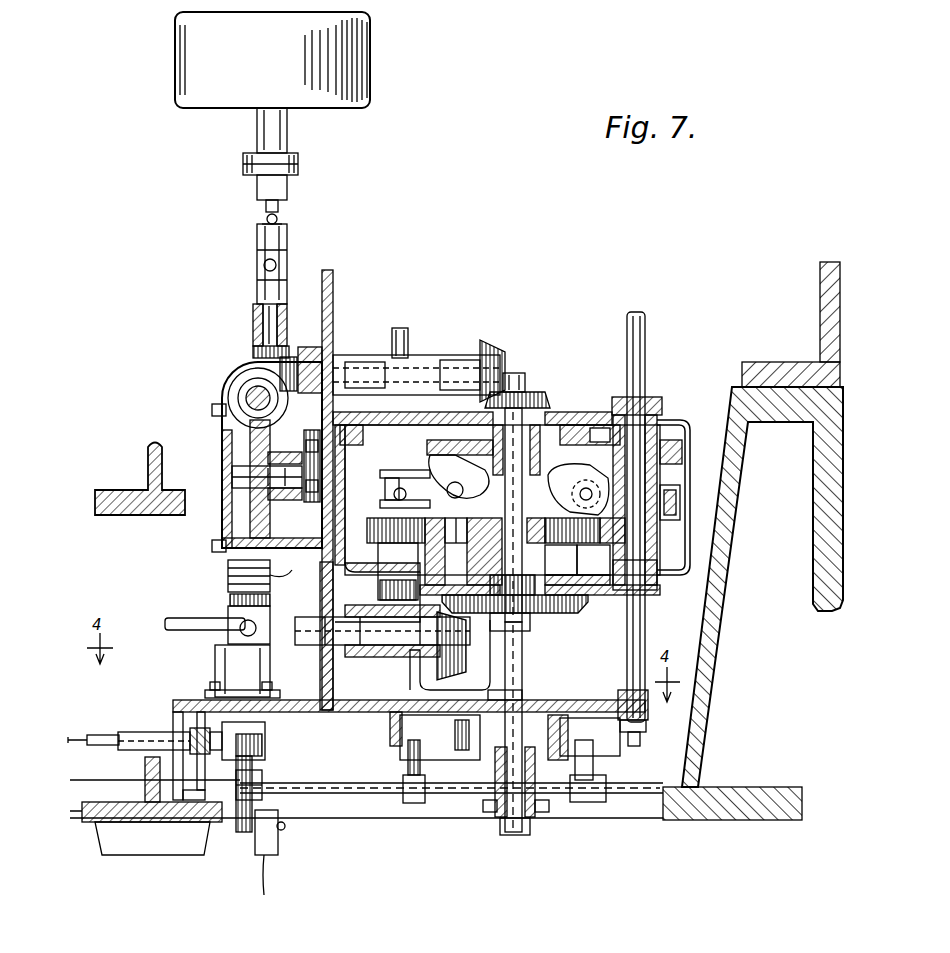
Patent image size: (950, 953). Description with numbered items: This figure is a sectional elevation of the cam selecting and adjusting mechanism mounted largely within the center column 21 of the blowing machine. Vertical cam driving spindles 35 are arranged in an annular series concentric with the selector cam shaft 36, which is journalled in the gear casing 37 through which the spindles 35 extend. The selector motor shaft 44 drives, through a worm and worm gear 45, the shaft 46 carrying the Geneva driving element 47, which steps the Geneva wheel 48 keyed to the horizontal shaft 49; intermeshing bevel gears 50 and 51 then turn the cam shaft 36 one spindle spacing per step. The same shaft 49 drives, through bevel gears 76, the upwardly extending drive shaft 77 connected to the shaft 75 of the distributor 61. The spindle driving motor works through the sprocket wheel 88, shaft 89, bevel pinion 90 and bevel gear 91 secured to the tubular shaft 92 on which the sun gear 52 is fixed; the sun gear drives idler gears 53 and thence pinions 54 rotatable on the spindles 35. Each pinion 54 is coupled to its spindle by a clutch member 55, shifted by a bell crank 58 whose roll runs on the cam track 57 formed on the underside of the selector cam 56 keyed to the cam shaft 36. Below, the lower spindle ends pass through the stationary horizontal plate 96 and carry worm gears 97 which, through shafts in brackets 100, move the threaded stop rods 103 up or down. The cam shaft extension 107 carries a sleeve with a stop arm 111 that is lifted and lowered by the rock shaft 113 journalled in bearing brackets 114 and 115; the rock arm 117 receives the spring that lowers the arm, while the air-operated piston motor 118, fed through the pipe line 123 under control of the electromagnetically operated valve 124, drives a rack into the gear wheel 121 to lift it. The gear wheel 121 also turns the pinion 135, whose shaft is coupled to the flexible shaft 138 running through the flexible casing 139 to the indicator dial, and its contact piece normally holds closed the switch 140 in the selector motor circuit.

The distributor 61 is at (362, 72).
The shaft 75 is at (258, 148).
The drive shaft 77 is at (280, 222).
The bevel gears 76 is at (252, 350).
The Geneva wheel 48 is at (333, 306).
The shaft of the selector motor 44 is at (228, 386).
The worm and worm gear 45 is at (252, 442).
The shaft 46 is at (234, 478).
The Geneva driving element 47 is at (306, 444).
The horizontal shaft 49 is at (380, 362).
The bevel gear 50 is at (492, 352).
The selector cam shaft 36 is at (520, 378).
The bevel gear 51 is at (532, 394).
The sun gear 52 is at (522, 514).
The cam track 57 is at (420, 460).
The bell cranks 58 is at (575, 468).
The selector cam 56 is at (545, 437).
The tubular shaft 92 is at (561, 560).
The idler gears 53 is at (593, 560).
The gear casing 37 is at (604, 418).
The cam driving spindle 35 is at (640, 350).
The clutch member 55 is at (682, 480).
The pinion 54 is at (680, 525).
The center column 21 is at (823, 330).
The sprocket wheel 88 is at (322, 600).
The shaft 89 is at (302, 640).
The bevel pinion 90 is at (440, 668).
The bevel gear 91 is at (590, 612).
The electromagnetically operated valve 124 is at (230, 584).
The pipe line 123 is at (212, 624).
The air-operated piston motor 118 is at (232, 674).
The flexible casing 139 is at (150, 735).
The flexible shaft 138 is at (76, 745).
The pinion 135 is at (264, 745).
The bearing bracket 115 is at (264, 768).
The gear wheel 121 is at (240, 832).
The switch 140 is at (280, 842).
The rock shaft 113 is at (352, 786).
The bracket 100 is at (420, 762).
The rock arm 117 is at (414, 804).
The stop arm 111 is at (495, 800).
The shaft extension 107 is at (500, 830).
The bearing bracket 114 is at (585, 804).
The stop rod 103 is at (545, 692).
The stationary horizontal plate 96 is at (624, 706).
The worm gear 97 is at (646, 738).